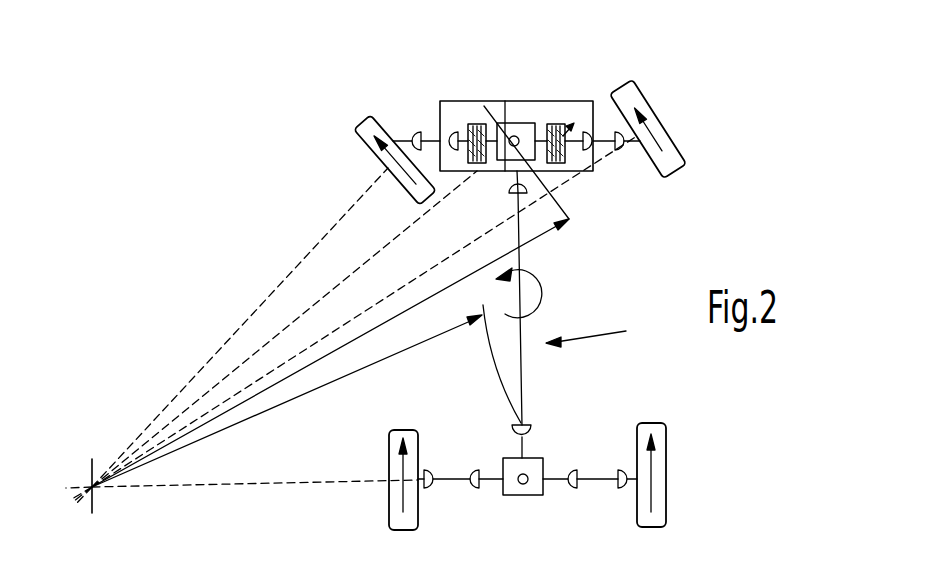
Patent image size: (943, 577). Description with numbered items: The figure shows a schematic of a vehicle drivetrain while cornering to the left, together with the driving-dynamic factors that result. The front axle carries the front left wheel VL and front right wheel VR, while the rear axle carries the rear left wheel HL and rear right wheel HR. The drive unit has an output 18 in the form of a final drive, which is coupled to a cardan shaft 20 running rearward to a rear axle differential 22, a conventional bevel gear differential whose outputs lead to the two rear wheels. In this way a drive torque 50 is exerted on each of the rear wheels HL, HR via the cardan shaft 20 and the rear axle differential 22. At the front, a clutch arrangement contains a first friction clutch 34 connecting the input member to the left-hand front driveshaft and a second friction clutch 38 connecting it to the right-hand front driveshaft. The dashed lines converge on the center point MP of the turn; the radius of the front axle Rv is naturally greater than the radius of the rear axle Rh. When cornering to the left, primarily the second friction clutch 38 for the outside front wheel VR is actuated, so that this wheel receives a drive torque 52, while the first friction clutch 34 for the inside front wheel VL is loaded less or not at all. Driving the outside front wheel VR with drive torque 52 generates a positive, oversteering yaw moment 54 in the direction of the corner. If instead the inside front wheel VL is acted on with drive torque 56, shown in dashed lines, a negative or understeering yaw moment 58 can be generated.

The output 18 is at (522, 123).
The cardan shaft 20 is at (528, 392).
The rear axle differential 22 is at (520, 497).
The first friction clutch 34 is at (472, 124).
The second friction clutch 38 is at (560, 124).
The drive torque 50 is at (400, 452).
The drive torque 52 is at (655, 127).
The yaw moment 54 is at (541, 287).
The drive torque 56 is at (402, 187).
The yaw moment 58 is at (602, 330).
The front left wheel VL is at (368, 133).
The front right wheel VR is at (677, 160).
The rear left wheel HL is at (397, 502).
The rear right wheel HR is at (657, 493).
The center of curvature MP is at (109, 490).
The radius of the front axle Rv is at (330, 353).
The radius of the rear axle Rh is at (287, 400).